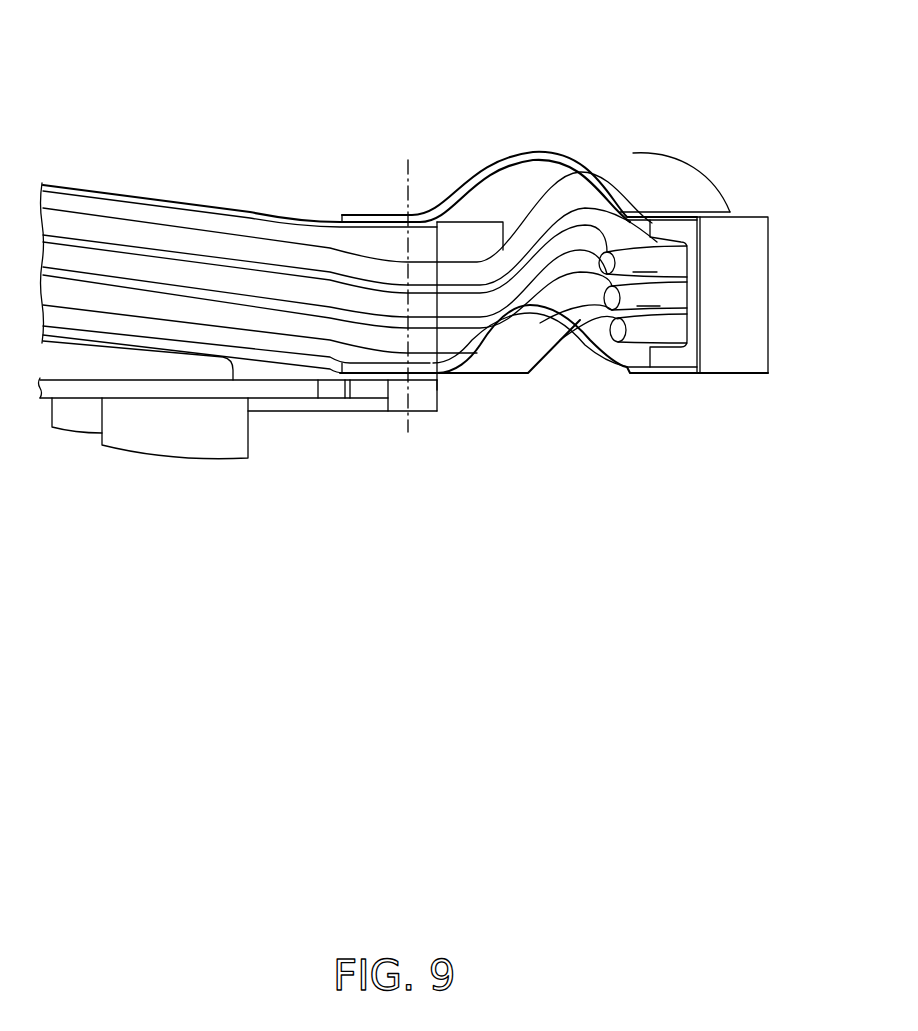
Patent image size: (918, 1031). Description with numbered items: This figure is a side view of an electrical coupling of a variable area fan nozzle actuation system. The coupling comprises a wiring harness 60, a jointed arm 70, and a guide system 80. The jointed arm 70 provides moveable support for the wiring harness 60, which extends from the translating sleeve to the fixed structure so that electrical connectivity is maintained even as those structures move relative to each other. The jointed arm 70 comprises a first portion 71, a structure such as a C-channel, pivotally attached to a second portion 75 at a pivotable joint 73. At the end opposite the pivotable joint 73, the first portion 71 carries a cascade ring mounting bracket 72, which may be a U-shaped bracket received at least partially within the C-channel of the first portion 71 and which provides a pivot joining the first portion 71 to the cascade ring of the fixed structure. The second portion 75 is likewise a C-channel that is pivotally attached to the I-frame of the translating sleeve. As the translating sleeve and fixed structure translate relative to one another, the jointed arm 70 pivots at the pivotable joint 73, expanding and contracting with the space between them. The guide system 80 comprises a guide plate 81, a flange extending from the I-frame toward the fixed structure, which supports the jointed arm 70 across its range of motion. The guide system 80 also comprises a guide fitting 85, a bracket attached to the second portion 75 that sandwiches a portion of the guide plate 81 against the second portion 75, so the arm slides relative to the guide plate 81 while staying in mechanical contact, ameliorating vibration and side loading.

The wiring harness 60 is at (140, 303).
The jointed arm 70 is at (607, 30).
The first portion 71 is at (678, 185).
The cascade ring mounting bracket 72 is at (743, 243).
The pivotable joint 73 is at (410, 248).
The second portion 75 is at (313, 217).
The guide system 80 is at (252, 439).
The guide plate 81 is at (233, 388).
The guide fitting 85 is at (365, 402).